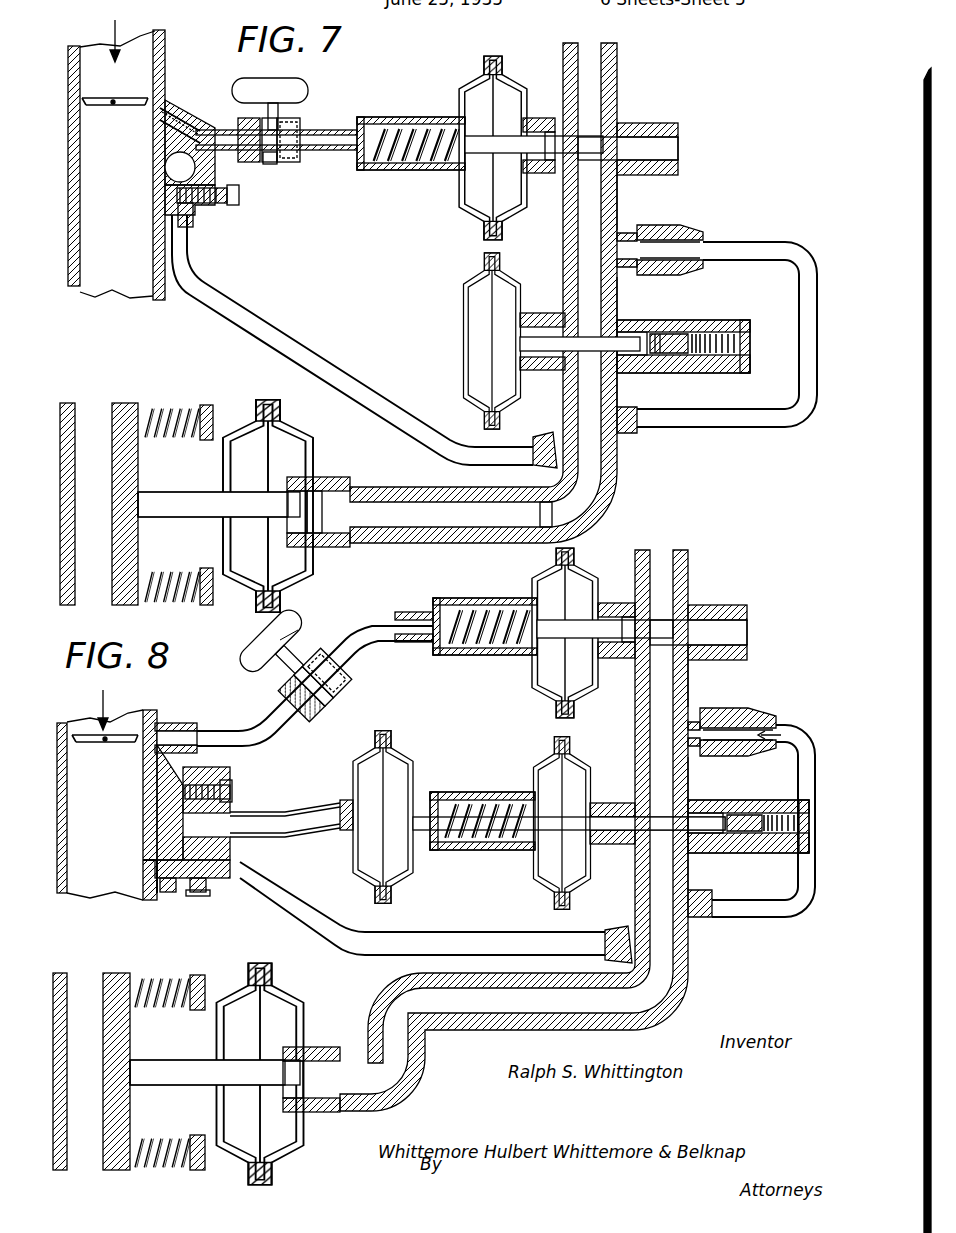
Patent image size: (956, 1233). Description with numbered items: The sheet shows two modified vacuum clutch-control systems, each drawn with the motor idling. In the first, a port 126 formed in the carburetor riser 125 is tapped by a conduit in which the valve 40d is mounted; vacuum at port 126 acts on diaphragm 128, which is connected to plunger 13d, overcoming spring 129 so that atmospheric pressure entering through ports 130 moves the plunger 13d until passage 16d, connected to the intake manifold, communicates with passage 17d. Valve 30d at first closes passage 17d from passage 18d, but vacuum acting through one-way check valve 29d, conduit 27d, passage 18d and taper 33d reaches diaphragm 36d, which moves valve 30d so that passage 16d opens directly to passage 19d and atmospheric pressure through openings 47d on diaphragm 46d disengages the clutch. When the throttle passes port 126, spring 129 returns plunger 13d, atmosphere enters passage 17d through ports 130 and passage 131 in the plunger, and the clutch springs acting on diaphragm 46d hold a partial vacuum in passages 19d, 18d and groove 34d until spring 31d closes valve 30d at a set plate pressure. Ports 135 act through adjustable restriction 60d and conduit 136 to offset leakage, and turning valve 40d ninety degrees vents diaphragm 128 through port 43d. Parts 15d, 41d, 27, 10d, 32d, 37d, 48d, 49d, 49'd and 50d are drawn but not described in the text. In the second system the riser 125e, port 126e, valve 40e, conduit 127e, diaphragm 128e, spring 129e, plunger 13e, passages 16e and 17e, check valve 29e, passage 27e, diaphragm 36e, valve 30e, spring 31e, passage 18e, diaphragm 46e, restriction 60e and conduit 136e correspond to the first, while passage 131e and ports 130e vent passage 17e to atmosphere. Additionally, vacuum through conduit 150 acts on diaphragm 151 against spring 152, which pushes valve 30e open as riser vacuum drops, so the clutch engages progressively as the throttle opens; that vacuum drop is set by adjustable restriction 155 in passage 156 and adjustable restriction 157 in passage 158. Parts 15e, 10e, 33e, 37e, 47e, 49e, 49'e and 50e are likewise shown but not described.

In FIG. 7, the carburetor riser 125 is at (73, 46).
In FIG. 7, the tank 15d is at (158, 62).
In FIG. 7, the port 126 is at (141, 125).
In FIG. 7, the ports 135 is at (180, 117).
In FIG. 7, the valve 40d is at (298, 92).
In FIG. 7, the valve tube 41d is at (285, 136).
In FIG. 7, the screw 27 is at (228, 166).
In FIG. 7, the port 43d is at (278, 163).
In FIG. 7, the adjustable restriction 60d is at (232, 208).
In FIG. 7, the diaphragm 128 is at (470, 92).
In FIG. 7, the spring 129 is at (388, 118).
In FIG. 7, the ports 130 is at (532, 118).
In FIG. 7, the passage 131 is at (548, 175).
In FIG. 7, the pipe 10d is at (592, 52).
In FIG. 7, the passage 16d is at (598, 82).
In FIG. 7, the plunger 13d is at (616, 145).
In FIG. 7, the passage 17d is at (596, 190).
In FIG. 7, the one-way check valve 29d is at (662, 236).
In FIG. 7, the conduit 27d is at (778, 252).
In FIG. 7, the valve 30d is at (636, 334).
In FIG. 7, the spring 31d is at (680, 334).
In FIG. 7, the spring 32d is at (746, 336).
In FIG. 7, the taper 33d is at (634, 370).
In FIG. 7, the diaphragm 36d is at (466, 276).
In FIG. 7, the diaphragm housing 37d is at (463, 328).
In FIG. 7, the groove 34d is at (550, 374).
In FIG. 7, the passage 18d is at (592, 455).
In FIG. 7, the passage 19d is at (355, 545).
In FIG. 7, the conduit 136 is at (262, 328).
In FIG. 7, the diaphragm 46d is at (300, 452).
In FIG. 7, the openings 47d is at (226, 488).
In FIG. 7, the rod 48d is at (155, 490).
In FIG. 7, the plate 49d is at (125, 402).
In FIG. 7, the plate 49'd is at (64, 474).
In FIG. 7, the spring 50d is at (170, 404).
In FIG. 8, the carburetor riser 125e is at (60, 723).
In FIG. 8, the tank 15e is at (128, 745).
In FIG. 8, the port 126e is at (165, 732).
In FIG. 8, the passage 158 is at (222, 752).
In FIG. 8, the adjustable restriction 157 is at (216, 782).
In FIG. 8, the conduit 150 is at (284, 810).
In FIG. 8, the adjustable restriction 155 is at (164, 880).
In FIG. 8, the passage 156 is at (138, 886).
In FIG. 8, the adjustable restriction 60e is at (198, 896).
In FIG. 8, the valve 40e is at (300, 630).
In FIG. 8, the conduit 127e is at (355, 650).
In FIG. 8, the spring 129e is at (455, 598).
In FIG. 8, the diaphragm 128e is at (540, 576).
In FIG. 8, the ports 130e is at (606, 602).
In FIG. 8, the passage 131e is at (612, 662).
In FIG. 8, the pipe 10e is at (665, 565).
In FIG. 8, the passage 16e is at (668, 582).
In FIG. 8, the plunger 13e is at (702, 622).
In FIG. 8, the passage 17e is at (662, 690).
In FIG. 8, the one-way check valve 29e is at (730, 720).
In FIG. 8, the passage 27e is at (788, 922).
In FIG. 8, the valve 30e is at (718, 806).
In FIG. 8, the spring 31e is at (746, 812).
In FIG. 8, the cylinder 33e is at (692, 858).
In FIG. 8, the diaphragm 36e is at (590, 762).
In FIG. 8, the diaphragm housing 37e is at (442, 796).
In FIG. 8, the diaphragm 151 is at (395, 742).
In FIG. 8, the spring 152 is at (492, 793).
In FIG. 8, the conduit 136e is at (458, 931).
In FIG. 8, the passage 18e is at (650, 947).
In FIG. 8, the diaphragm 46e is at (287, 990).
In FIG. 8, the boss 47e is at (216, 1060).
In FIG. 8, the plate 49e is at (112, 972).
In FIG. 8, the plate 49'e is at (58, 1057).
In FIG. 8, the spring 50e is at (166, 974).